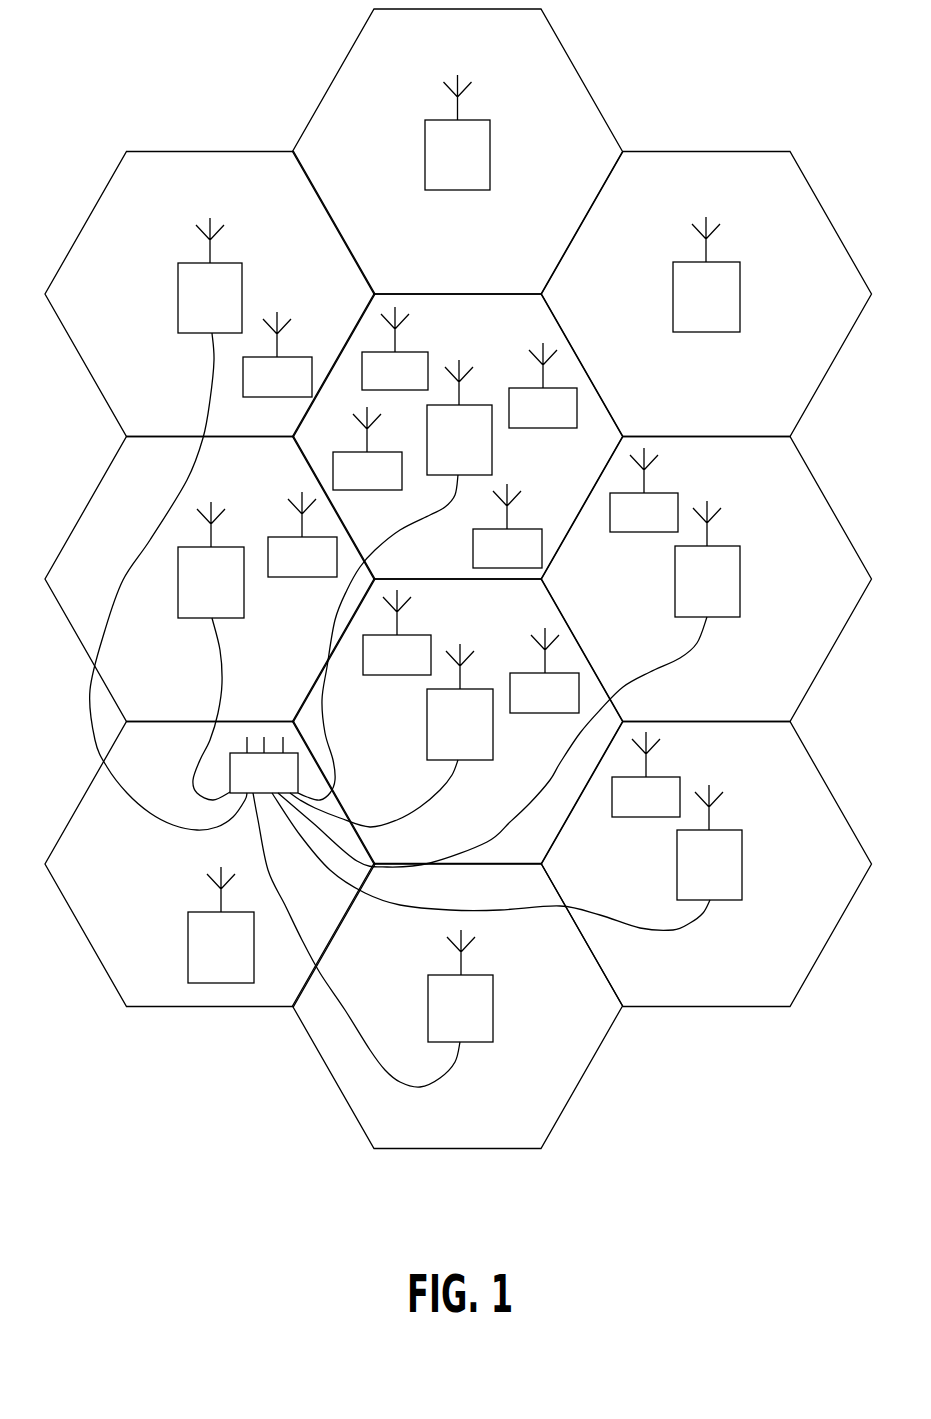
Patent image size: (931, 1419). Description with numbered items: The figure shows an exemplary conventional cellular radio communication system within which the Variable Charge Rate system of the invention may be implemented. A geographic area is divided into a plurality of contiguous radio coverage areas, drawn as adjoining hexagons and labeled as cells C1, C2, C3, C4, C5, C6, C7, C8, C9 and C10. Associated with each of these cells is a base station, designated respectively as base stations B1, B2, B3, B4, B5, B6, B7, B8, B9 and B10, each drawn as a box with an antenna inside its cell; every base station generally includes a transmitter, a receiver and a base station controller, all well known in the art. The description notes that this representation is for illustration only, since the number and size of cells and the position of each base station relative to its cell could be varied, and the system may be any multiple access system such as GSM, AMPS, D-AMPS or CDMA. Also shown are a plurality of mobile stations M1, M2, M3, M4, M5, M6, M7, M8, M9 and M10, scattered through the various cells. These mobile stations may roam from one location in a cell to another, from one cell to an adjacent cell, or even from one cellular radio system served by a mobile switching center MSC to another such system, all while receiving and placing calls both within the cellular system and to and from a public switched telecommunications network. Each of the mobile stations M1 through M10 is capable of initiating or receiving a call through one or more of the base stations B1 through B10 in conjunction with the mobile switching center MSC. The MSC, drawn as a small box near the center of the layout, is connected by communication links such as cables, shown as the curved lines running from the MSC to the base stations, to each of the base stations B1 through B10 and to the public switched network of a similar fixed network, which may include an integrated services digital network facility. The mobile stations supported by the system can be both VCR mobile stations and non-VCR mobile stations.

The cell C1 is at (414, 566).
The cell C2 is at (662, 421).
The cell C3 is at (665, 707).
The cell C4 is at (417, 851).
The cell C5 is at (167, 709).
The cell C6 is at (165, 424).
The cell C7 is at (414, 279).
The cell C8 is at (663, 989).
The cell C9 is at (418, 1132).
The cell C10 is at (170, 992).
The base station B1 is at (395, 580).
The base station B2 is at (706, 274).
The base station B3 is at (509, 684).
The base station B4 is at (391, 735).
The base station B5 is at (211, 651).
The base station B6 is at (168, 524).
The base station B7 is at (457, 132).
The base station B8 is at (507, 857).
The base station B9 is at (373, 940).
The base station B10 is at (221, 925).
The mobile station M1 is at (646, 774).
The mobile station M2 is at (302, 534).
The mobile station M3 is at (367, 448).
The mobile station M4 is at (543, 385).
The mobile station M5 is at (644, 490).
The mobile station M6 is at (395, 348).
The mobile station M7 is at (507, 526).
The mobile station M8 is at (544, 670).
The mobile station M9 is at (397, 632).
The mobile station M10 is at (277, 354).
The mobile switching center MSC is at (264, 765).